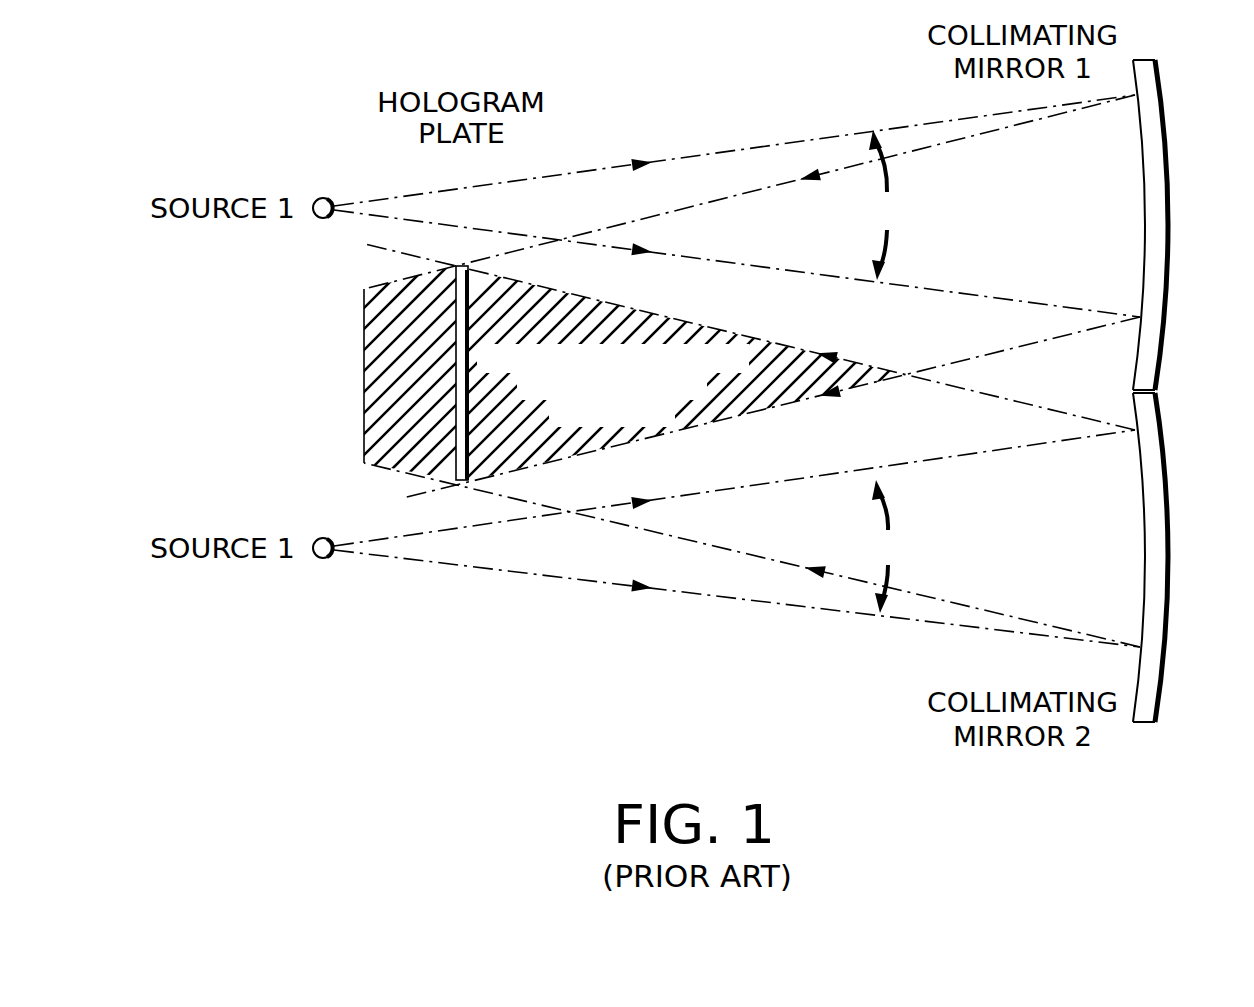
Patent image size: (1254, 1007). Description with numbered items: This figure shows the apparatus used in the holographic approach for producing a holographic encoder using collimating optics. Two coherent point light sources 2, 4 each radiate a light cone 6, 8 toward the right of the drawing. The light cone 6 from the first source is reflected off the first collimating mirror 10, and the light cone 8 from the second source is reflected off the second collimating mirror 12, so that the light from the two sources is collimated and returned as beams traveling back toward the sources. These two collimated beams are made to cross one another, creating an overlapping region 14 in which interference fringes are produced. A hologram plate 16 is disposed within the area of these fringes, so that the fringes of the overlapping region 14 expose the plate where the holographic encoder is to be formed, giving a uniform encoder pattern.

The coherent light source 2 is at (323, 198).
The coherent light source 4 is at (323, 538).
The light cone 6 is at (880, 205).
The light cone 8 is at (882, 546).
The collimating mirror 10 is at (1170, 228).
The collimating mirror 12 is at (1170, 553).
The overlapping region 14 is at (782, 360).
The hologram plate 16 is at (460, 262).